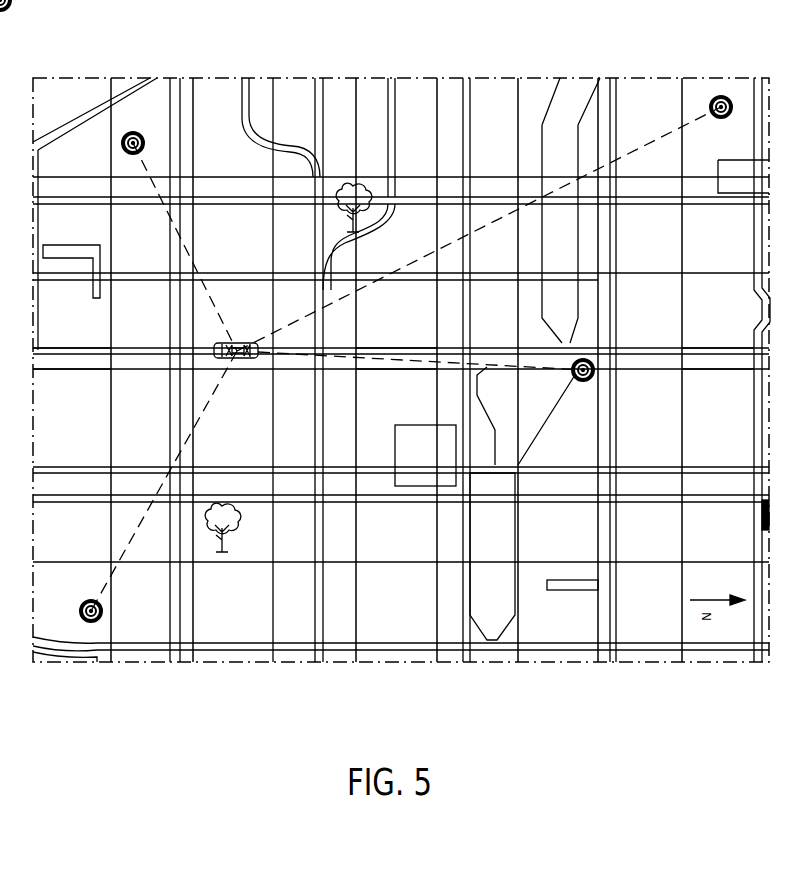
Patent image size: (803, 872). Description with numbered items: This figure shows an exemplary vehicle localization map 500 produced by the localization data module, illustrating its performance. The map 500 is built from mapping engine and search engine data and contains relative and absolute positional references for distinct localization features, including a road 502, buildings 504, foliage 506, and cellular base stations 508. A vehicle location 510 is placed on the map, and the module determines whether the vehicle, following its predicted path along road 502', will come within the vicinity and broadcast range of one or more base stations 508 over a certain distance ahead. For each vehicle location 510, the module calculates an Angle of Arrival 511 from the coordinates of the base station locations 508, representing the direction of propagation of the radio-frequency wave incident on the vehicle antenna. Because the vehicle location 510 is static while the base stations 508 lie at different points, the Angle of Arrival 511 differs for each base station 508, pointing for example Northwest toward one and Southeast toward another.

The vehicle localization map 500 is at (572, 73).
The road 502 is at (401, 370).
The predicted path road 502' is at (393, 349).
The buildings 504 is at (68, 244).
The foliage 506 is at (358, 185).
The cellular base stations 508 is at (137, 131).
The vehicle location 510 is at (243, 343).
The Angle of Arrival 511 is at (185, 240).